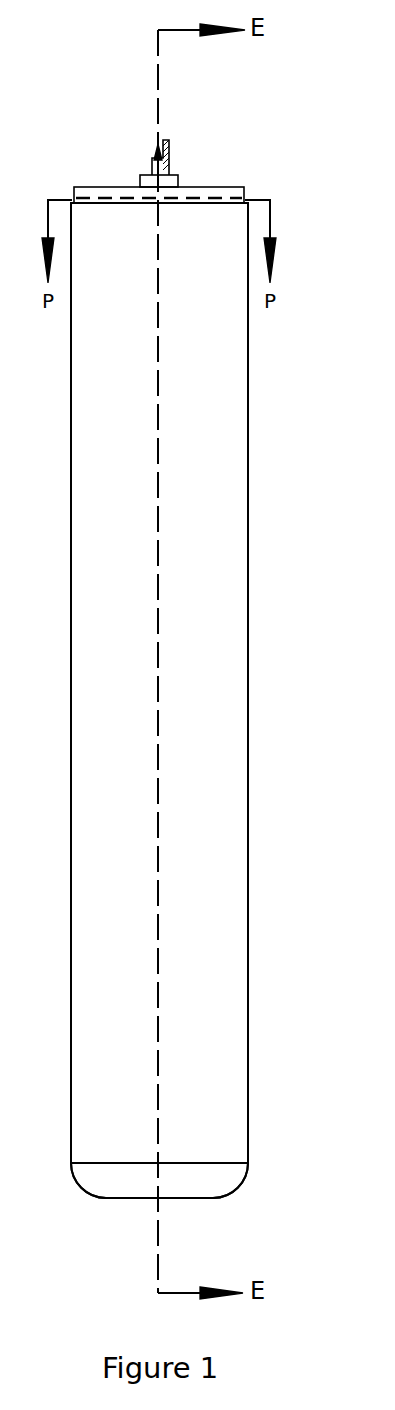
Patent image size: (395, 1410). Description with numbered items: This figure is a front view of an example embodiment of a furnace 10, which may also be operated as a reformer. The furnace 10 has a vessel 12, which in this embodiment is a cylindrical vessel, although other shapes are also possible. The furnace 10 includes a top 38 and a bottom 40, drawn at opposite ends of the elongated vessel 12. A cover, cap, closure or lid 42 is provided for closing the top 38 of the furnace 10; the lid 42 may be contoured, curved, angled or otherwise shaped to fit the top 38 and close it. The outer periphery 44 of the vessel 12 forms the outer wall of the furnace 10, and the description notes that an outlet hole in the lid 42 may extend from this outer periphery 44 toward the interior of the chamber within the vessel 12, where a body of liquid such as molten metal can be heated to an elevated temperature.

The furnace 10 is at (305, 120).
The vessel 12 is at (191, 738).
The top 38 is at (97, 187).
The bottom 40 is at (133, 1198).
The lid 42 is at (227, 193).
The outer periphery 44 is at (70, 392).